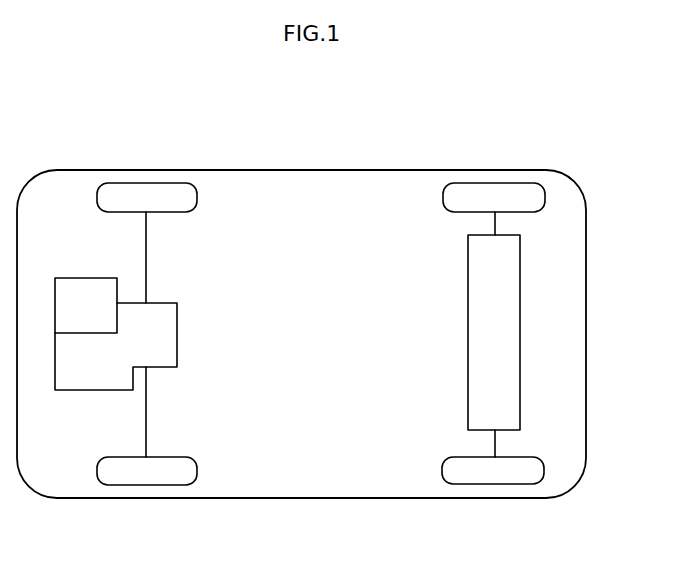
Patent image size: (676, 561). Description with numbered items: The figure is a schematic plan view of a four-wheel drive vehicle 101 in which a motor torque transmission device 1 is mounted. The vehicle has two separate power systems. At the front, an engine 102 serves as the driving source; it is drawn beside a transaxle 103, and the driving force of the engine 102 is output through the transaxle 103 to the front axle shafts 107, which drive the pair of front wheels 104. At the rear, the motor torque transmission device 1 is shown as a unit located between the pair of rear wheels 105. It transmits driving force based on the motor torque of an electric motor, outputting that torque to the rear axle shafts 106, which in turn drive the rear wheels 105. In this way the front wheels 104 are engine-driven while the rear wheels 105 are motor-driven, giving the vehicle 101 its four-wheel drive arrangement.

The motor torque transmission device 1 is at (457, 362).
The four-wheel drive vehicle 101 is at (587, 238).
The engine 102 is at (85, 277).
The transaxle 103 is at (83, 393).
The front wheels 104 is at (147, 182).
The rear wheels 105 is at (492, 182).
The rear axle shafts 106 is at (496, 219).
The front axle shafts 107 is at (148, 262).